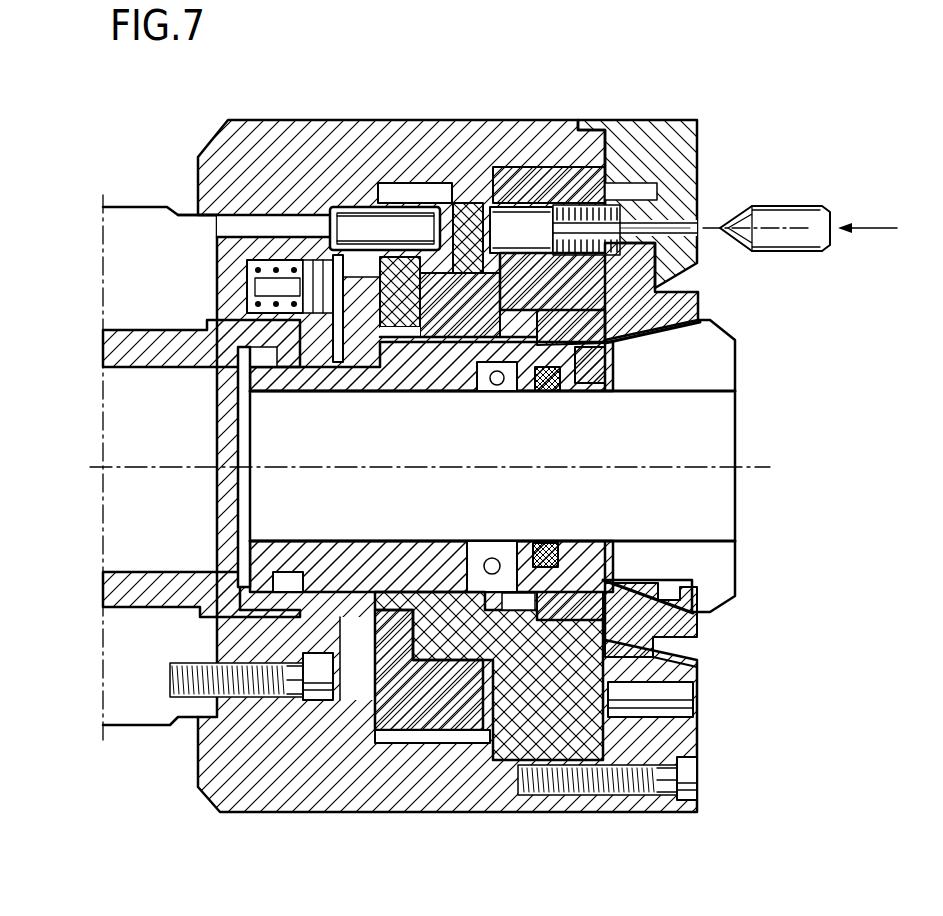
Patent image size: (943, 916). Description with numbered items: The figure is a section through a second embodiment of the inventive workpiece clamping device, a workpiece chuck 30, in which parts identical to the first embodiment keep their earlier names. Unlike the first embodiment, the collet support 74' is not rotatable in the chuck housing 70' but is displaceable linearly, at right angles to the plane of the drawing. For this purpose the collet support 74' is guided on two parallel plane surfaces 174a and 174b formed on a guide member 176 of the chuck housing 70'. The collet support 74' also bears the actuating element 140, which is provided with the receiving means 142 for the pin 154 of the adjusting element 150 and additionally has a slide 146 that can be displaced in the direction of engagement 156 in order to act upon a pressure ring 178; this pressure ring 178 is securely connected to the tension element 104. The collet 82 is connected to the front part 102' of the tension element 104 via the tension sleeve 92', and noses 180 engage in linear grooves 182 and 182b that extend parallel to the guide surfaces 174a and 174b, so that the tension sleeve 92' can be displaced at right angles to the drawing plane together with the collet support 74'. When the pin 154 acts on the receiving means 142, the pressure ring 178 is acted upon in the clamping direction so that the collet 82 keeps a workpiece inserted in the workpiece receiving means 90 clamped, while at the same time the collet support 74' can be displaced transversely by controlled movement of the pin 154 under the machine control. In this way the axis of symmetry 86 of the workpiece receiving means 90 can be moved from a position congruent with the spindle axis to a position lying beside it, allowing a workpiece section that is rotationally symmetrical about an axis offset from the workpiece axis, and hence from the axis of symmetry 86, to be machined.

The workpiece chuck 30 is at (742, 103).
The chuck housing 70' is at (437, 409).
The collet support 74' is at (640, 313).
The collet 82 is at (710, 577).
The axis of symmetry 86 is at (700, 468).
The workpiece receiving means 90 is at (673, 397).
The tension sleeve 92' is at (533, 523).
The front part of the tension element 102' is at (486, 467).
The tension element 104 is at (235, 381).
The actuating element 140 is at (670, 200).
The receiving means 142 is at (703, 233).
The slide 146 is at (635, 222).
The adjusting element 150 is at (807, 258).
The pin 154 is at (770, 253).
The direction of engagement 156 is at (877, 232).
The plane guide surface 174a is at (620, 290).
The plane guide surface 174b is at (657, 625).
The guide member 176 is at (510, 723).
The pressure ring 178 is at (450, 183).
The nose 180 is at (500, 195).
The linear groove 182 is at (487, 362).
The linear groove 182b is at (477, 558).